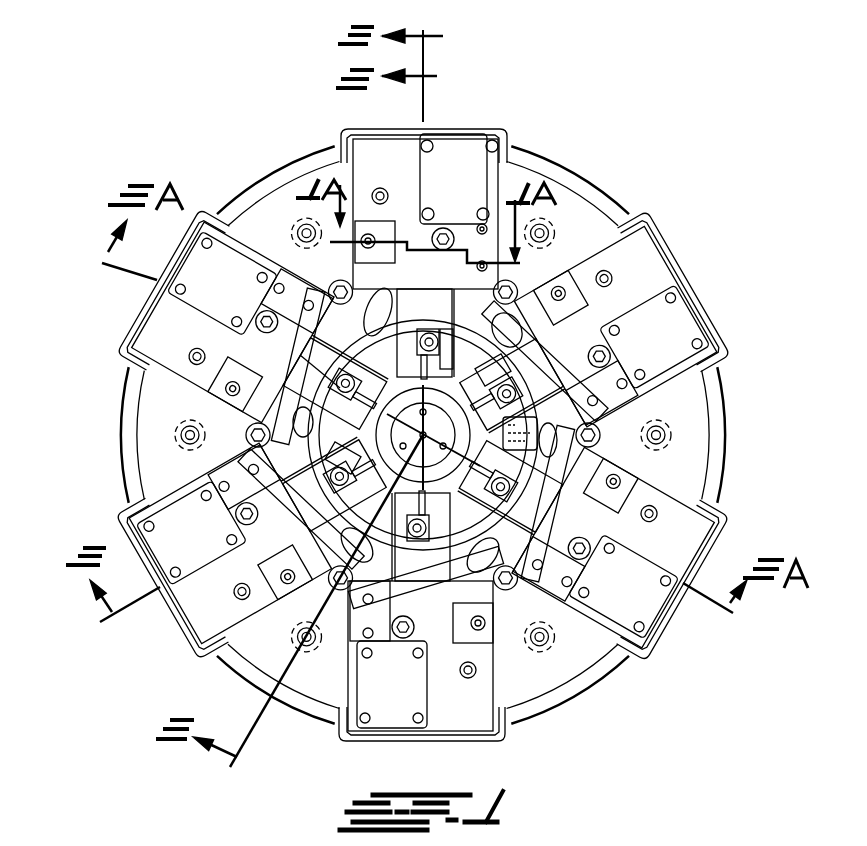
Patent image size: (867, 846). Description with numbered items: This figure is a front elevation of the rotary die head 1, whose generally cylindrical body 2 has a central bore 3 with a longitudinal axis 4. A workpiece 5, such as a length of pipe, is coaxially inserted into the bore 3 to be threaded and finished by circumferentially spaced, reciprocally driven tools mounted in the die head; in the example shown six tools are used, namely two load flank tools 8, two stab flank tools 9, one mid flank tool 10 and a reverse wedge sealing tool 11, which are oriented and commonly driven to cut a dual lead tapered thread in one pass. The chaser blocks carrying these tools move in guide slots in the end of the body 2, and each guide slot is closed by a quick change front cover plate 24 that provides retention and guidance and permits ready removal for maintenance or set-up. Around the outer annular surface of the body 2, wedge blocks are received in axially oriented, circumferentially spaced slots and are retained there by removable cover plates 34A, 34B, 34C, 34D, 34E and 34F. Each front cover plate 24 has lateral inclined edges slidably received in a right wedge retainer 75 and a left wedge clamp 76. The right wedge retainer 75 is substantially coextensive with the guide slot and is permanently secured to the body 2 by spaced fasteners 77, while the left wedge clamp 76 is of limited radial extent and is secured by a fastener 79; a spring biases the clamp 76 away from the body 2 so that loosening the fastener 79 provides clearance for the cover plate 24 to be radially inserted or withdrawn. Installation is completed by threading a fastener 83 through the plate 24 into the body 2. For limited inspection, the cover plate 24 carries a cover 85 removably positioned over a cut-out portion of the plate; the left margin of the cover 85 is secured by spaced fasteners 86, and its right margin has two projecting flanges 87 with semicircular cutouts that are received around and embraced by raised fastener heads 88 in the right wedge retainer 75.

The rotary die head 1 is at (118, 430).
The body 2 is at (687, 413).
The central bore 3 is at (474, 526).
The longitudinal axis 4 is at (423, 435).
The workpiece 5 is at (372, 440).
The load flank tool 8 is at (417, 317).
The stab flank tool 9 is at (497, 370).
The mid flank tool 10 is at (330, 383).
The reverse wedge sealing tool 11 is at (557, 470).
The front cover plate 24 is at (388, 140).
The cover plate 34A is at (505, 419).
The cover plate 34B is at (146, 318).
The cover plate 34C is at (185, 620).
The cover plate 34D is at (405, 740).
The cover plate 34E is at (670, 630).
The cover plate 34F is at (690, 288).
The right wedge retainer 75 is at (556, 232).
The left wedge clamp 76 is at (355, 248).
The fasteners 77 is at (478, 226).
The fastener 79 is at (436, 239).
The fastener 83 is at (383, 188).
The cover 85 is at (455, 148).
The fasteners 86 is at (423, 146).
The projecting flanges 87 is at (494, 140).
The raised fastener heads 88 is at (502, 134).